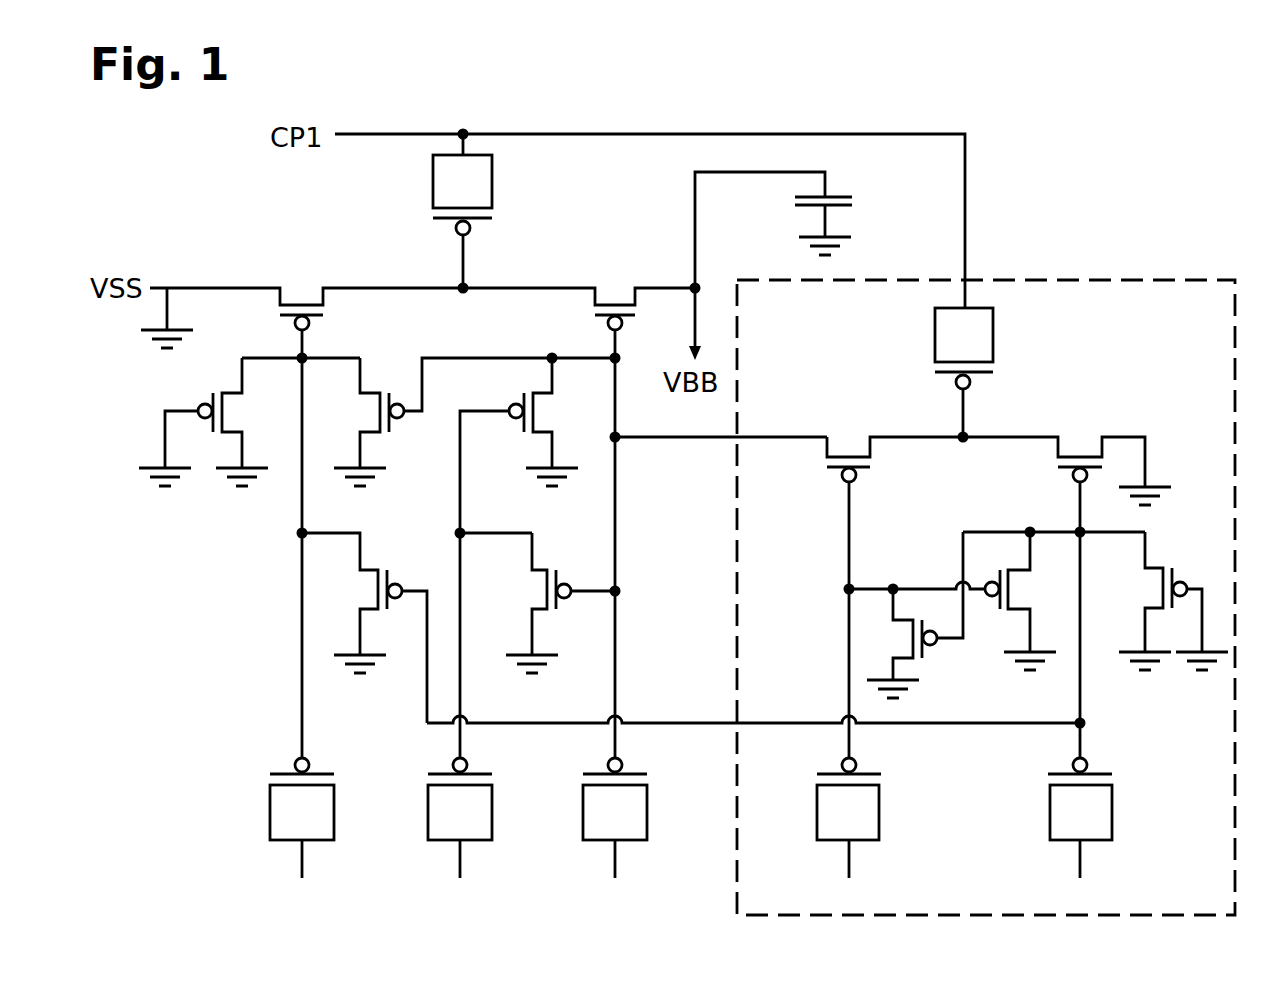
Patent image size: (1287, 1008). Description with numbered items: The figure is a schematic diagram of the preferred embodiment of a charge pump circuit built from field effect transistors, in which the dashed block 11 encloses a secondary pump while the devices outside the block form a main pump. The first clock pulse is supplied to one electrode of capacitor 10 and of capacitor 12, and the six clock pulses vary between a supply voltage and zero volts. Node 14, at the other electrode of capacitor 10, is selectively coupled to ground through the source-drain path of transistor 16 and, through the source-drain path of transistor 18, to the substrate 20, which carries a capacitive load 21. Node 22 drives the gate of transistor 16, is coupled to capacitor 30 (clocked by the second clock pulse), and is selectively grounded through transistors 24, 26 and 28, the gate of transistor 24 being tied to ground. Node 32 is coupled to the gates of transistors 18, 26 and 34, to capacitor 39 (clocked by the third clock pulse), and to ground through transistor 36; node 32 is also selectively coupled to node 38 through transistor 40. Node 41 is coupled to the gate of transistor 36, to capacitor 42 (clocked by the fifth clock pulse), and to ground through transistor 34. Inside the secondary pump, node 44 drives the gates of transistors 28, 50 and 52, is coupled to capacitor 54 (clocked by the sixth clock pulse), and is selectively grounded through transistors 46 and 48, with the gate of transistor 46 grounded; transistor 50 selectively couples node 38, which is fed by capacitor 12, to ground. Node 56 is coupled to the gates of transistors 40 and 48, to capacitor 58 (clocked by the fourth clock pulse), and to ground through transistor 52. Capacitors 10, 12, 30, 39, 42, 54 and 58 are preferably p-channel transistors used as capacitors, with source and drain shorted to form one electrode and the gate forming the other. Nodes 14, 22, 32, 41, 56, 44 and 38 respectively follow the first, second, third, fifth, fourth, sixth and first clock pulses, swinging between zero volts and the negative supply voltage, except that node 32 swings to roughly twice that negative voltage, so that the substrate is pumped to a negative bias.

The capacitor 10 is at (492, 186).
The block 11 is at (1037, 280).
The capacitor 12 is at (993, 340).
The node 14 is at (463, 292).
The transistor 16 is at (302, 295).
The transistor 18 is at (607, 295).
The substrate 20 is at (694, 310).
The capacitive load 21 is at (852, 198).
The node 22 is at (307, 355).
The transistor 24 is at (228, 410).
The transistor 26 is at (372, 411).
The transistor 28 is at (370, 590).
The capacitor 30 is at (268, 805).
The node 32 is at (619, 440).
The transistor 34 is at (540, 590).
The transistor 36 is at (540, 415).
The node 38 is at (963, 440).
The capacitor 39 is at (633, 820).
The transistor 40 is at (845, 455).
The node 41 is at (457, 530).
The capacitor 42 is at (428, 815).
The node 44 is at (1075, 530).
The transistor 46 is at (1150, 556).
The transistor 48 is at (1020, 597).
The transistor 50 is at (1076, 455).
The transistor 52 is at (903, 660).
The capacitor 54 is at (1105, 820).
The node 56 is at (848, 588).
The capacitor 58 is at (867, 820).